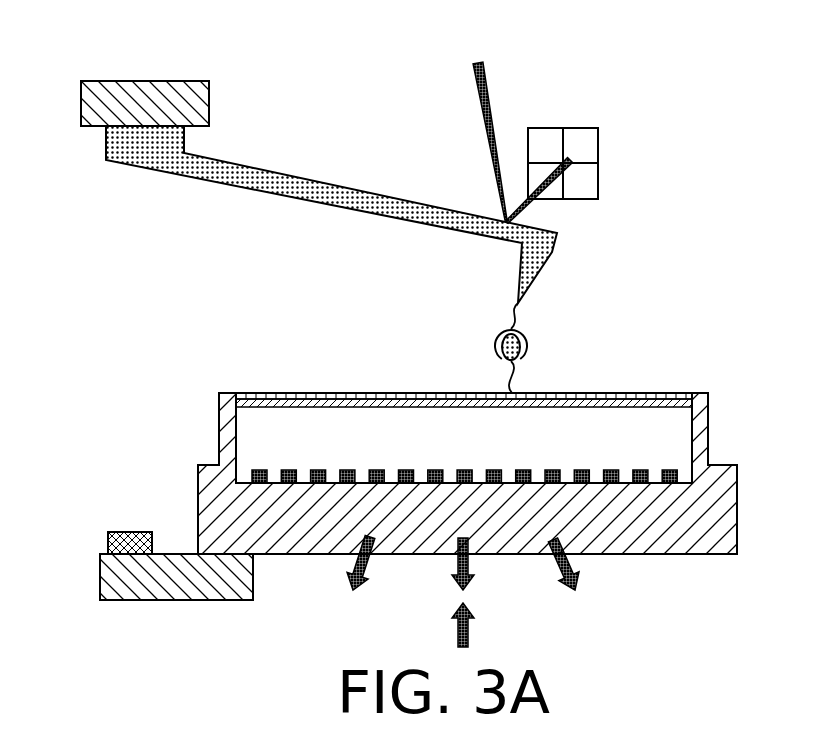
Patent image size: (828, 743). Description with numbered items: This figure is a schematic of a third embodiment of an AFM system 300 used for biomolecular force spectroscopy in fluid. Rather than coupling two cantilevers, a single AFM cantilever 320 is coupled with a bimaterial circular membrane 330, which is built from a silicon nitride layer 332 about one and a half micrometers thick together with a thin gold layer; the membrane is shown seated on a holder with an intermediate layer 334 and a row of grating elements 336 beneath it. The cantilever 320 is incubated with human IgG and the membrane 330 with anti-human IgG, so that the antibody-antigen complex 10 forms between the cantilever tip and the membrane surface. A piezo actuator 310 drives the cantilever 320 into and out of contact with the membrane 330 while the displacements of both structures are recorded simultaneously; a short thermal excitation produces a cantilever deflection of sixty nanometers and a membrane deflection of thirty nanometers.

The AFM-based detection system 300 is at (657, 78).
The piezo actuator 310 is at (80, 101).
The cantilever 320 is at (340, 203).
The antibody-antigen complex (H IgG / Anti-H IgG) 10 is at (495, 343).
The bimaterial circular membrane 330 is at (291, 386).
The silicon nitride 332 is at (377, 392).
The intermediate layer 334 is at (377, 409).
The diffraction grating elements 336 is at (470, 470).